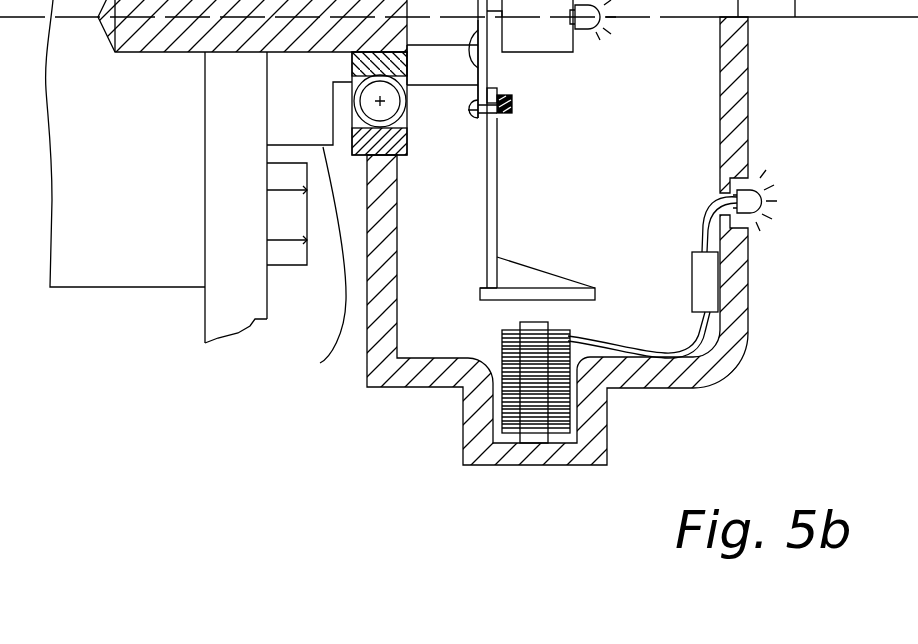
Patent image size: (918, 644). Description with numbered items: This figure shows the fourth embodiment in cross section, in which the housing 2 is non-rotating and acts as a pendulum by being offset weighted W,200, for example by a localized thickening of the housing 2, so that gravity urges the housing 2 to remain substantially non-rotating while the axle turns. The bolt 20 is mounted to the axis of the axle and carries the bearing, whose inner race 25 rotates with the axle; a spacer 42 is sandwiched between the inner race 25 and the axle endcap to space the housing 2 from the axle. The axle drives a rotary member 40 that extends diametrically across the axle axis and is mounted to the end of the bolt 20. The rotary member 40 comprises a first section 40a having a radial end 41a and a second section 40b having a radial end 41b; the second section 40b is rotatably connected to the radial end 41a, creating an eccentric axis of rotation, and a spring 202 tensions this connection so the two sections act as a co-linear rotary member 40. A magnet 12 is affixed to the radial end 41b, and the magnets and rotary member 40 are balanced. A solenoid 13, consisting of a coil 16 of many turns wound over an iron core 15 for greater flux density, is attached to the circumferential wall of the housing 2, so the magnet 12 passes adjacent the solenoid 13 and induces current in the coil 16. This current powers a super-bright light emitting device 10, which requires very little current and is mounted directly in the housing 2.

The housing 2 is at (403, 387).
The light emitting device 10 is at (752, 185).
The magnet 12 is at (550, 288).
The solenoid 13 is at (568, 336).
The iron core 15 is at (560, 316).
The coil 16 is at (502, 341).
The bolt 20 is at (415, 86).
The inner race 25 is at (407, 134).
The rotary member 40 is at (498, 200).
The first section 40a is at (488, 66).
The second section 40b is at (487, 198).
The radial end 41a is at (482, 125).
The radial end 41b is at (481, 288).
The spacer 42 is at (320, 363).
The spring 202 is at (510, 113).
The offset weight pendulum W,200 is at (688, 375).